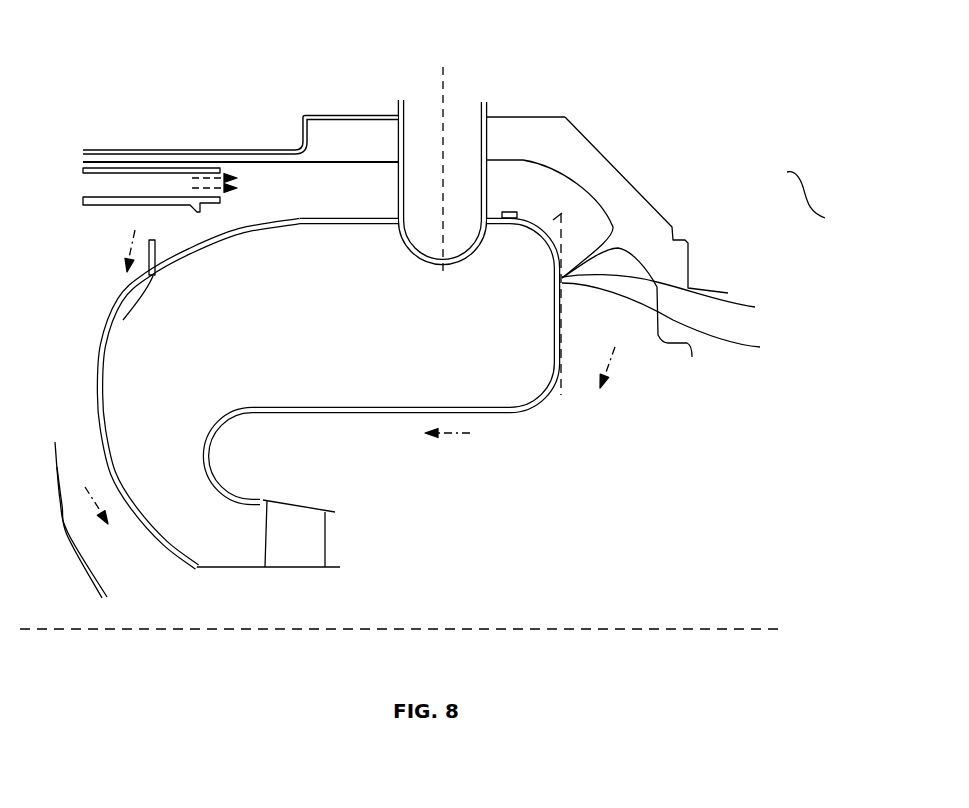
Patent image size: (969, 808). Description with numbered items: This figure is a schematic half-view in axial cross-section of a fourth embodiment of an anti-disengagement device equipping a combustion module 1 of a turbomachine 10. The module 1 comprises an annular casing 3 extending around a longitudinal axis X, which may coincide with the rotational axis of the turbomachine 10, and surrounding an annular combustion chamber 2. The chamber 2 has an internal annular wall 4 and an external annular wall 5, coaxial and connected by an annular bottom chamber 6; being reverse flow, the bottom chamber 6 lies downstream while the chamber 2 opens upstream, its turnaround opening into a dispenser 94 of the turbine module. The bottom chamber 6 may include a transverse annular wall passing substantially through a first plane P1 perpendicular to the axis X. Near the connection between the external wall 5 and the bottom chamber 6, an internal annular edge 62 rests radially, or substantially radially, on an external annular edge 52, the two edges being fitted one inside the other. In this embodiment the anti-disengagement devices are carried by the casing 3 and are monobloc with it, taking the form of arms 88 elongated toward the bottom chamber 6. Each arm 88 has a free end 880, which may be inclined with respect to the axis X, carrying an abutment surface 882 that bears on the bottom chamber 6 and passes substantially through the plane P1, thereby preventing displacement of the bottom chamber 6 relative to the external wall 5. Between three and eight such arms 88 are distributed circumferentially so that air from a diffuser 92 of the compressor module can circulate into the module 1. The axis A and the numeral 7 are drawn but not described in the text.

The combustion module 1 is at (738, 248).
The turbomachine 10 is at (820, 178).
The annular combustion chamber 2 is at (440, 336).
The annular casing 3 is at (653, 250).
The internal annular wall 4 is at (492, 420).
The external annular wall 5 is at (297, 214).
The external annular edge 52 is at (493, 213).
The bottom chamber 6 is at (551, 200).
The internal annular edge 62 is at (513, 212).
The front partition 7 is at (466, 135).
The arm 88 is at (612, 235).
The free end 880 is at (680, 298).
The abutment surface 882 is at (683, 321).
The diffuser 92 is at (137, 190).
The dispenser 94 is at (312, 550).
The axis A is at (443, 90).
The longitudinal axis X is at (753, 629).
The first plane P1 is at (558, 395).